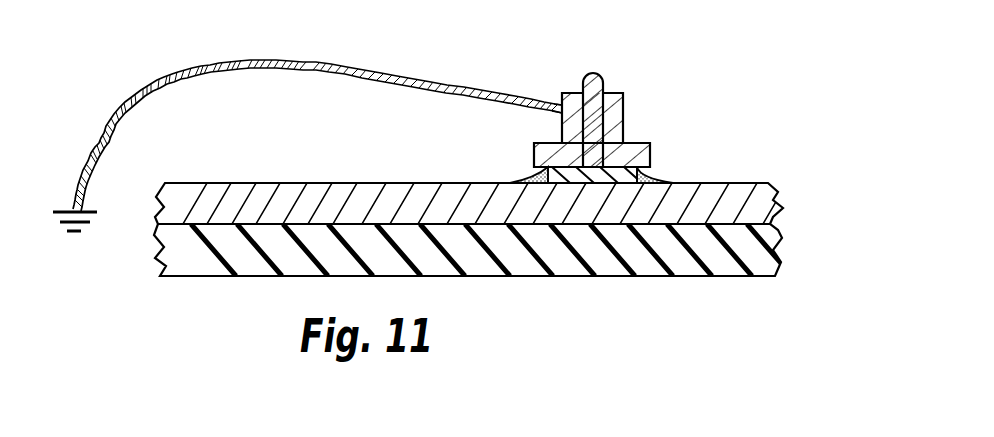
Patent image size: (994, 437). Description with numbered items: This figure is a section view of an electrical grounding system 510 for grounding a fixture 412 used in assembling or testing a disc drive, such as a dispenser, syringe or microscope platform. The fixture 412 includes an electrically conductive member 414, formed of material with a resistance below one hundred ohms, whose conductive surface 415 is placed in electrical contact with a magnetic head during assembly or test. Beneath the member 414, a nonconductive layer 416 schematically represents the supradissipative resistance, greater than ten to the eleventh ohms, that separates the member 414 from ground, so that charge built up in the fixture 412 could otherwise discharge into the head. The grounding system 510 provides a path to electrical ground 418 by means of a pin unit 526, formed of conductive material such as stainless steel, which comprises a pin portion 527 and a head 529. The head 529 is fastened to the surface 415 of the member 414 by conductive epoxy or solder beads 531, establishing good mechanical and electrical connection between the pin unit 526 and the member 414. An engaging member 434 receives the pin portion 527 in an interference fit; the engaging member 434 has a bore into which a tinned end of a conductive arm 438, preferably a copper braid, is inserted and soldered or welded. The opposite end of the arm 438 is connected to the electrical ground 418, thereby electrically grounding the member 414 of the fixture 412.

The fixture 412 is at (706, 182).
The electrically conductive member 414 is at (782, 207).
The conductive surface 415 is at (335, 183).
The nonconductive layer 416 is at (692, 277).
The electrical ground 418 is at (88, 207).
The engaging member 434 is at (560, 128).
The arm 438 is at (260, 62).
The grounding system 510 is at (628, 54).
The pin unit 526 is at (606, 117).
The pin portion 527 is at (562, 93).
The head 529 is at (634, 146).
The solder beads 531 is at (527, 177).